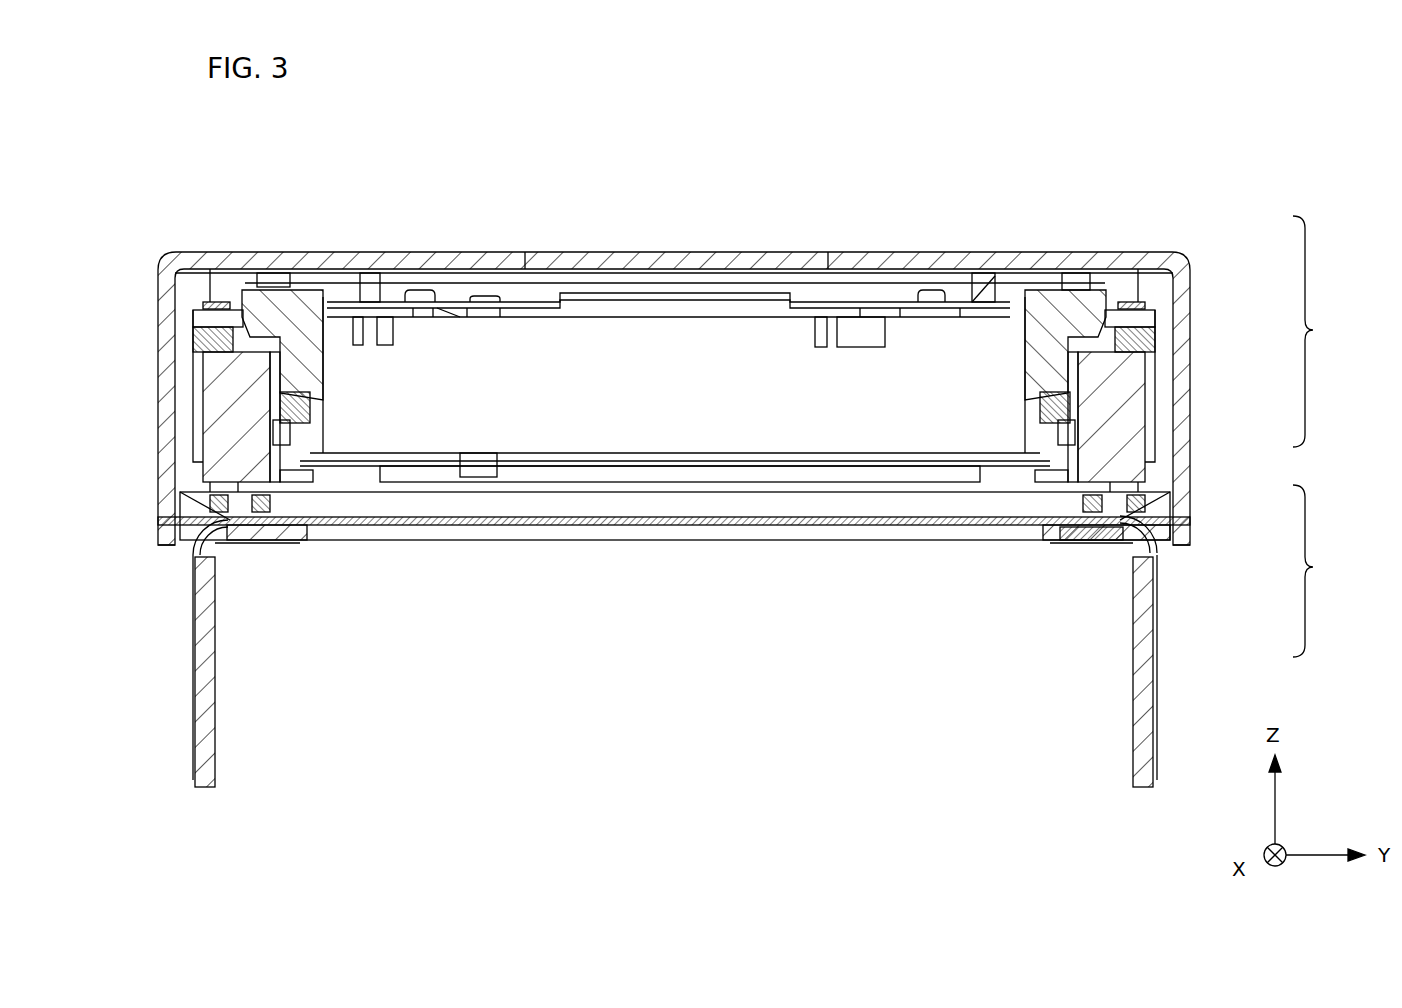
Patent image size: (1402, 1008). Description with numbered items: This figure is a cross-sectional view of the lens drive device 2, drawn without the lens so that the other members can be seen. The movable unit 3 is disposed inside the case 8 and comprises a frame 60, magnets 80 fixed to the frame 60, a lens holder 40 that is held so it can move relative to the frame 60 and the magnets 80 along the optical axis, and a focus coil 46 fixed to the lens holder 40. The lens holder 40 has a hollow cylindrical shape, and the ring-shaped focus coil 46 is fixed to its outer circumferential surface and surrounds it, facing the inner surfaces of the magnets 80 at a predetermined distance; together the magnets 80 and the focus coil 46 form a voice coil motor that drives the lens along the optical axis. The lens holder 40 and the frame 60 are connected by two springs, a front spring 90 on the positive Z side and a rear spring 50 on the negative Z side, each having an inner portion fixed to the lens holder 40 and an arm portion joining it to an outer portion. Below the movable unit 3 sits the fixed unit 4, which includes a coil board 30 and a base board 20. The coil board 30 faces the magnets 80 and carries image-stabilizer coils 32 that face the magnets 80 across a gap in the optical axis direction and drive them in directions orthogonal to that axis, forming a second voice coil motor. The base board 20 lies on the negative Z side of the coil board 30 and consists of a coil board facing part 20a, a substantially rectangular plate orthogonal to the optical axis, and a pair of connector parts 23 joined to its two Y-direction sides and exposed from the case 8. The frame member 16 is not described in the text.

The lens drive device 2 is at (1180, 200).
The movable unit 3 is at (1315, 331).
The fixed unit 4 is at (1315, 571).
The case 8 is at (167, 295).
The frame member 16 is at (1162, 490).
The base board 20 is at (1170, 553).
The coil board facing part 20a is at (1055, 545).
The connector parts 23 is at (195, 678).
The coil board 30 is at (1172, 521).
The image-stabilizer coils 32 is at (1138, 503).
The lens holder 40 is at (1055, 345).
The focus coil 46 is at (285, 400).
The rear spring 50 is at (1075, 470).
The frame 60 is at (1127, 343).
The magnets 80 is at (237, 440).
The front spring 90 is at (1037, 275).